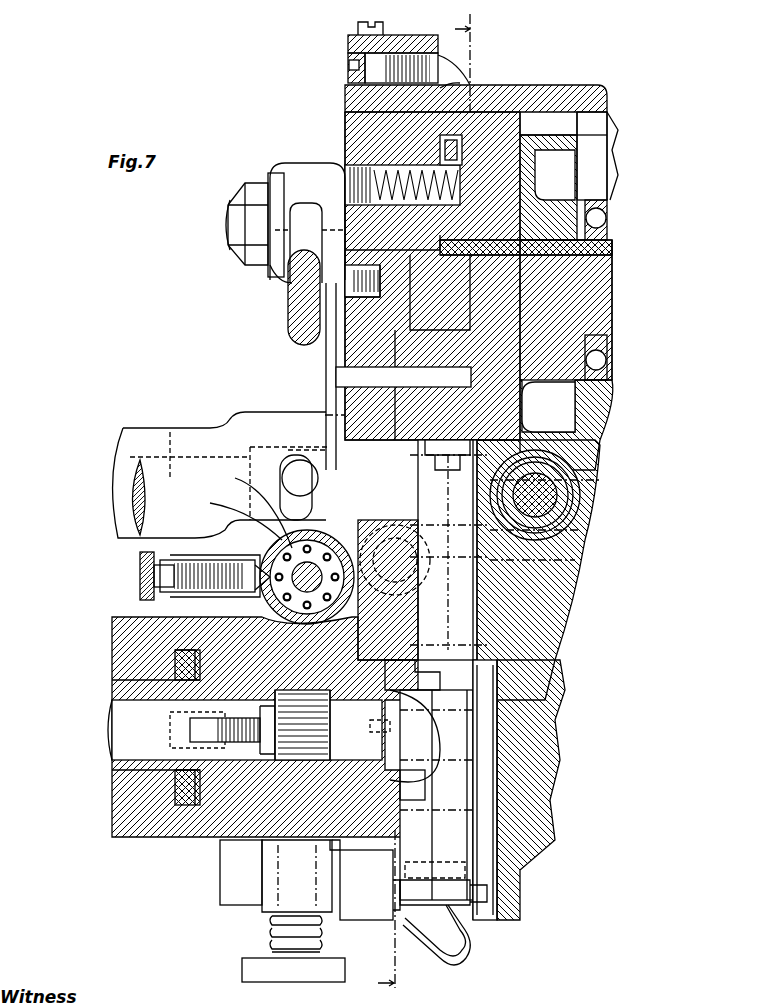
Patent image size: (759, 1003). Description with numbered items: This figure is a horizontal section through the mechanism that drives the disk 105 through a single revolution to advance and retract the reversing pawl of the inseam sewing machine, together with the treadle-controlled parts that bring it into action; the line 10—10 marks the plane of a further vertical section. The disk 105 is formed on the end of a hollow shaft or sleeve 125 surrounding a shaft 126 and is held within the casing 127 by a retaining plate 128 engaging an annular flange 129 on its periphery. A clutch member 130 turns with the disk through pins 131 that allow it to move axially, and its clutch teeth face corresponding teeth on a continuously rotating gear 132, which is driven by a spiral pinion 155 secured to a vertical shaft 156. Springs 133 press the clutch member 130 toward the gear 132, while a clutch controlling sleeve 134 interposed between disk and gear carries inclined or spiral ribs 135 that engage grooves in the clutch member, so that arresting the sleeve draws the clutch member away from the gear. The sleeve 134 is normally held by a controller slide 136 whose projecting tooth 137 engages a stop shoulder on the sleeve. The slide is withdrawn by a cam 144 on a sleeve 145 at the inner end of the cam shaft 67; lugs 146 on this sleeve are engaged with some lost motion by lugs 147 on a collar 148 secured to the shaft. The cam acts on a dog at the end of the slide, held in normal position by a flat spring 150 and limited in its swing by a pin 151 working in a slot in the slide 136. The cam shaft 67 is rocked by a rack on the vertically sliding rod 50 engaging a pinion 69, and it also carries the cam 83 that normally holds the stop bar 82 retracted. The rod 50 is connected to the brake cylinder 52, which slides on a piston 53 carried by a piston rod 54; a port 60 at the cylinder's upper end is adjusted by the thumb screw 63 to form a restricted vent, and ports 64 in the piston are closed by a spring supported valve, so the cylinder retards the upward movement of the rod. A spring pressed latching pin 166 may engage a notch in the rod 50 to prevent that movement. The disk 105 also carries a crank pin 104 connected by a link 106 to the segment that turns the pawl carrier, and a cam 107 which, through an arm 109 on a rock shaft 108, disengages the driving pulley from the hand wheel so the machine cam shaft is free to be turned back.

The section line 10— 10 is at (416, 498).
The vertically sliding rod 50 is at (270, 840).
The brake cylinder 52 is at (418, 600).
The piston 53 is at (225, 512).
The piston rod 54 is at (243, 504).
The port 60 is at (270, 545).
The thumb screw 63 is at (140, 573).
The ports 64 is at (360, 595).
The cam shaft 67 is at (120, 758).
The pinion 69 is at (280, 748).
The stop bar 82 is at (225, 770).
The cam 83 is at (180, 790).
The crank pin 104 is at (228, 225).
The disk 105 is at (352, 128).
The link 106 is at (296, 300).
The cam 107 is at (327, 406).
The rock shaft 108 is at (215, 420).
The arm 109 is at (300, 478).
The hollow shaft or sleeve 125 is at (612, 248).
The shaft 126 is at (350, 350).
The casing 127 is at (607, 106).
The retaining plate 128 is at (348, 97).
The annular flange 129 is at (458, 87).
The clutch member 130 is at (590, 96).
The pins 131 is at (355, 374).
The continuously rotating gear 132 is at (607, 140).
The springs 133 is at (380, 165).
The clutch controlling sleeve 134 is at (566, 113).
The inclined or spiral ribs 135 is at (470, 150).
The controller slide 136 is at (532, 425).
The projecting tooth 137 is at (452, 480).
The cam 144 is at (425, 806).
The sleeve 145 is at (418, 697).
The lugs 146 is at (431, 795).
The lugs 147 is at (383, 735).
The collar 148 is at (425, 790).
The flat spring 150 is at (460, 962).
The pin 151 is at (372, 922).
The spiral pinion 155 is at (575, 475).
The vertical shaft 156 is at (525, 492).
The spring pressed latching pin 166 is at (272, 935).